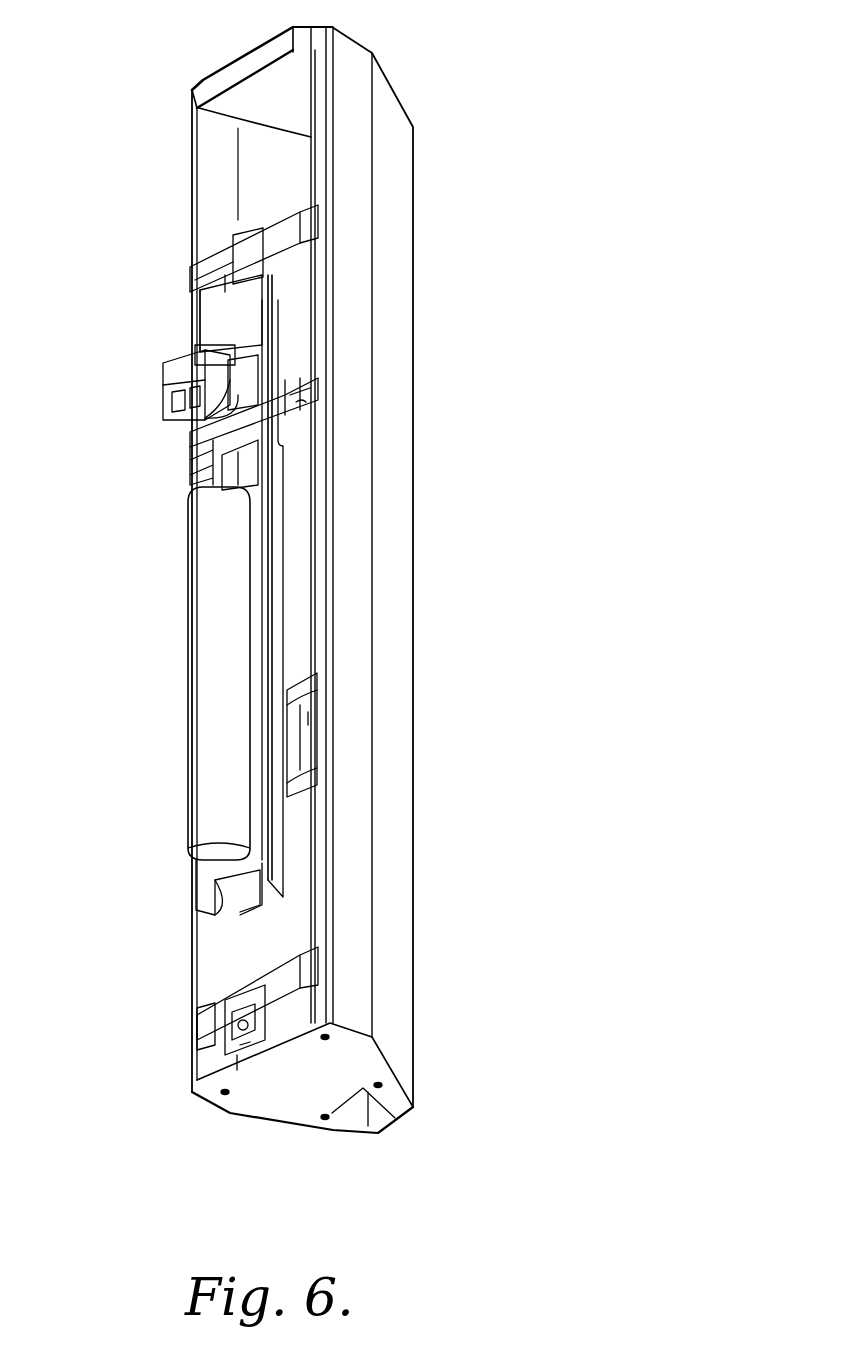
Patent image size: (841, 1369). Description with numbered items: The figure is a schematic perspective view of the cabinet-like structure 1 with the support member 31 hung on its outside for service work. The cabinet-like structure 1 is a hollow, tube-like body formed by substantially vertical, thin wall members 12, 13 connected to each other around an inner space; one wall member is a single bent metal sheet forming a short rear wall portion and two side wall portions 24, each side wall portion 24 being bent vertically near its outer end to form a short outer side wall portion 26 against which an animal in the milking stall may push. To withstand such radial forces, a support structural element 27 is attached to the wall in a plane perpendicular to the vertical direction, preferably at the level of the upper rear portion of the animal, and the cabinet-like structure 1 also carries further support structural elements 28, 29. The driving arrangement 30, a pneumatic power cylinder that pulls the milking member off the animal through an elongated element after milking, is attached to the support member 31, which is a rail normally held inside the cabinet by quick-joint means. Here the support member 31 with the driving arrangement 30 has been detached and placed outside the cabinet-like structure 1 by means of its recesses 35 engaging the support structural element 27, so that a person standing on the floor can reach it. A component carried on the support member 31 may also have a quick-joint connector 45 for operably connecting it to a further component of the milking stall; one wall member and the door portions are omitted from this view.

The cabinet-like structure 1 is at (160, 66).
The wall member 12 is at (283, 693).
The wall member 13 is at (283, 995).
The side wall portion 24 is at (393, 537).
The outer side wall portion 26 is at (348, 275).
The support structural element 27 is at (312, 377).
The further support structural element 28 is at (303, 200).
The further support structural element 29 is at (197, 85).
The driving arrangement 30 is at (203, 580).
The support member 31 is at (240, 322).
The recesses 35 is at (282, 432).
The quick-joint connector 45 is at (227, 1037).